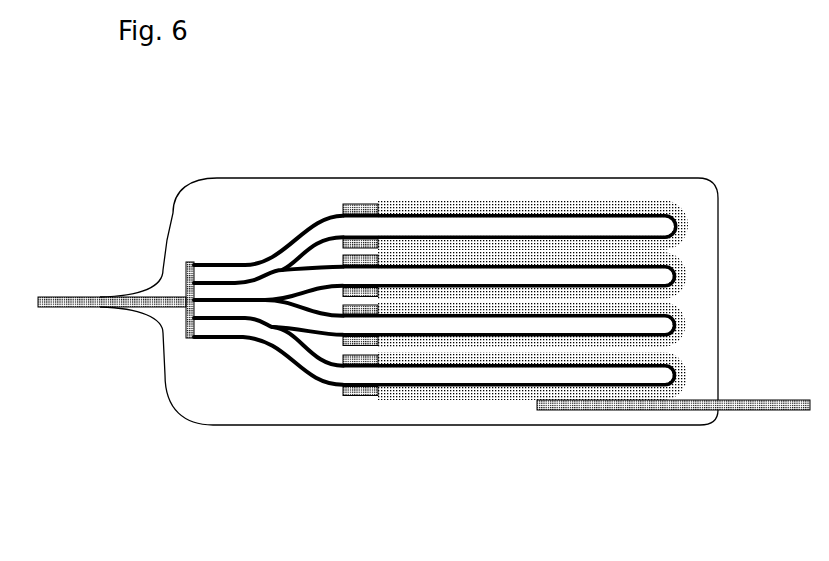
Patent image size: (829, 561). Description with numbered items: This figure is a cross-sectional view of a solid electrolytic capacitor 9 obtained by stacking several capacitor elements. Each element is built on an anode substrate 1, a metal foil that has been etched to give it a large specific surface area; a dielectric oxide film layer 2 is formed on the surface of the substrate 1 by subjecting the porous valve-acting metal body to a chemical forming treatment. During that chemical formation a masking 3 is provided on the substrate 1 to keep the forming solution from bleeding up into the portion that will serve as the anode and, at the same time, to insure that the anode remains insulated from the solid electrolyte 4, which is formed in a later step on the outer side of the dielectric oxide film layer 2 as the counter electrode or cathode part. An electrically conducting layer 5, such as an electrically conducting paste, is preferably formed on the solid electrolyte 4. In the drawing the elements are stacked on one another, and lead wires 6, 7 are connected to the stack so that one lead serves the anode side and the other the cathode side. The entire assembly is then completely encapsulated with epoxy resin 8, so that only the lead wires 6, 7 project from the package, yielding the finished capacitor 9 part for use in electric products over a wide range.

The anode substrate 1 is at (213, 278).
The dielectric oxide film layer 2 is at (268, 250).
The masking 3 is at (362, 205).
The solid electrolyte 4 is at (426, 210).
The electrically conducting layer 5 is at (188, 338).
The lead wire 6 is at (66, 297).
The lead wire 7 is at (706, 425).
The epoxy resin 8 is at (317, 413).
The capacitor 9 is at (640, 150).